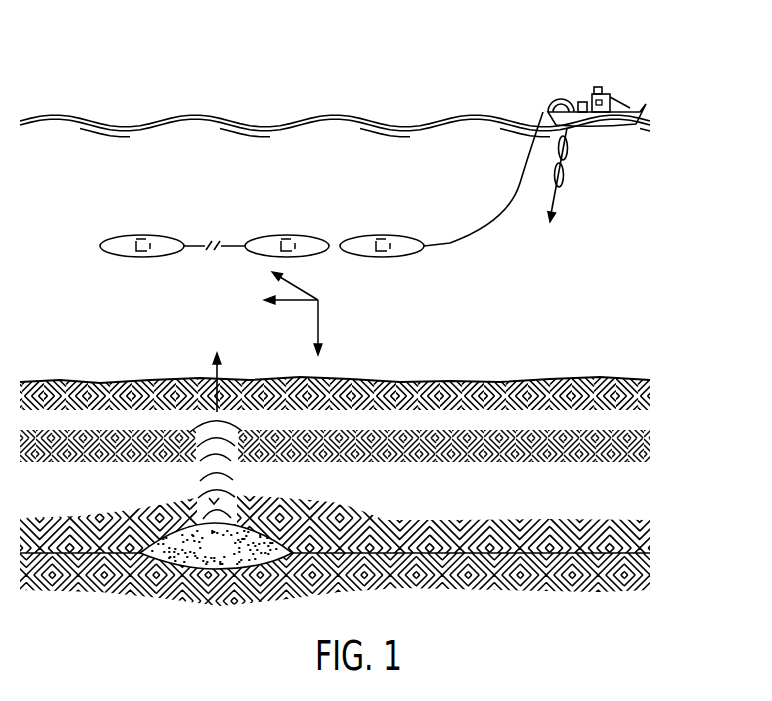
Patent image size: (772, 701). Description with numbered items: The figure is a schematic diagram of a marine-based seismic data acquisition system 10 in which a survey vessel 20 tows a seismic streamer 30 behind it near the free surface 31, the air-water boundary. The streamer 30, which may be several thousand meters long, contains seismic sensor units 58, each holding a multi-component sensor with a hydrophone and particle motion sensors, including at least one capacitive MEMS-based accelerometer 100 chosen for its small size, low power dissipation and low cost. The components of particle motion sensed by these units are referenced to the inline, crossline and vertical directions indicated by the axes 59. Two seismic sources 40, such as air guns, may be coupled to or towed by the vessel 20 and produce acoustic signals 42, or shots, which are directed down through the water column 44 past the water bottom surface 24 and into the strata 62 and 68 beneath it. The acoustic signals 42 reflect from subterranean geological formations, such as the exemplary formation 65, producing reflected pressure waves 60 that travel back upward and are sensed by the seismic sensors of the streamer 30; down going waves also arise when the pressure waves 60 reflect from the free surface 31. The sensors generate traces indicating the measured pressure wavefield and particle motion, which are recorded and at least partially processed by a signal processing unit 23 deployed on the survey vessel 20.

The marine-based seismic data acquisition system 10 is at (169, 91).
The free surface 31 is at (292, 118).
The survey vessel 20 is at (630, 105).
The signal processing unit 23 is at (583, 101).
The seismic streamer 30 is at (519, 184).
The seismic source 40 is at (567, 150).
The acoustic signal 42 is at (553, 207).
The water column 44 is at (611, 276).
The seismic sensor unit 58 is at (112, 242).
The capacitive MEMS-based accelerometer 100 is at (150, 243).
The axes 59 is at (345, 350).
The water bottom surface 24 is at (600, 380).
The pressure waves 60 is at (197, 484).
The stratum 62 is at (410, 530).
The formation 65 is at (228, 558).
The stratum 68 is at (549, 588).